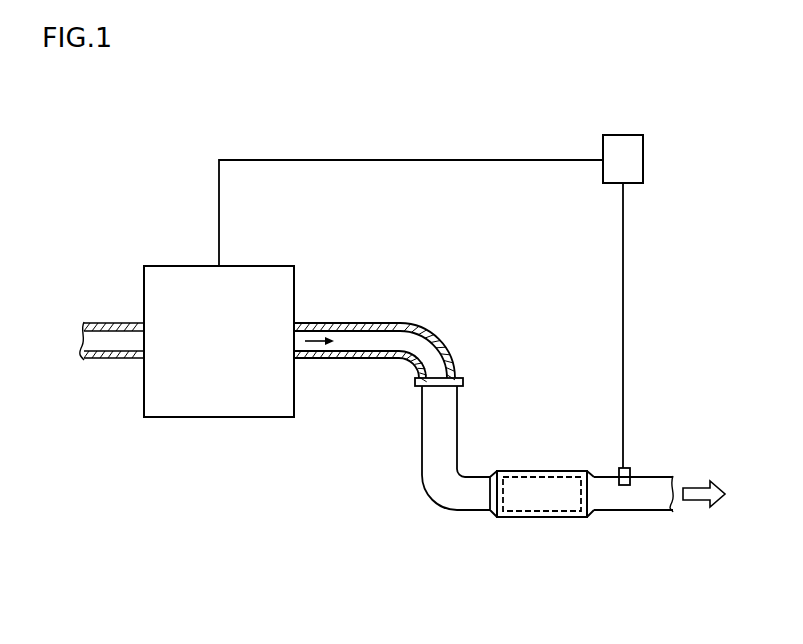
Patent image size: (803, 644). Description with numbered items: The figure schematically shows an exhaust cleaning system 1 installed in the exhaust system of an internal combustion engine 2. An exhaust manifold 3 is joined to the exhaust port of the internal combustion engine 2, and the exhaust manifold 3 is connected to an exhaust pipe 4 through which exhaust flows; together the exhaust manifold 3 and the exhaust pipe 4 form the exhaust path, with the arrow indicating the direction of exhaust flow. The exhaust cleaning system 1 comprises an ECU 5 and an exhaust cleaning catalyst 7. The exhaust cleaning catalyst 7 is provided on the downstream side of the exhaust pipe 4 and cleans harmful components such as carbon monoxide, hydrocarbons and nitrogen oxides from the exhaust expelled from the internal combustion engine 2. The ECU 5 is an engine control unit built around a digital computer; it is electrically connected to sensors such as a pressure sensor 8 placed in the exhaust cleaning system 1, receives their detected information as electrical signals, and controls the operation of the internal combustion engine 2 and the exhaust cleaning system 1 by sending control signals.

The exhaust cleaning system 1 is at (518, 524).
The internal combustion engine 2 is at (285, 261).
The exhaust manifold 3 is at (382, 322).
The exhaust pipe 4 is at (421, 428).
The ECU 5 is at (644, 150).
The exhaust cleaning catalyst 7 is at (560, 476).
The pressure sensor 8 is at (625, 487).